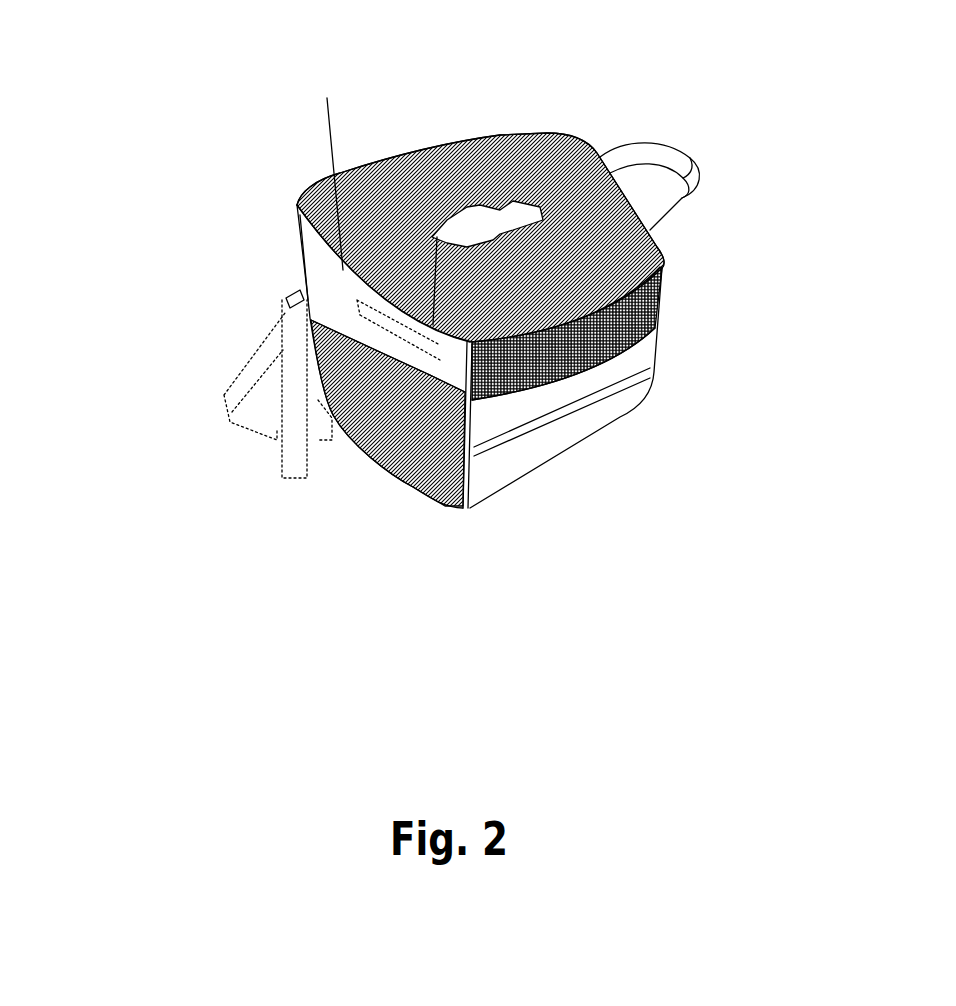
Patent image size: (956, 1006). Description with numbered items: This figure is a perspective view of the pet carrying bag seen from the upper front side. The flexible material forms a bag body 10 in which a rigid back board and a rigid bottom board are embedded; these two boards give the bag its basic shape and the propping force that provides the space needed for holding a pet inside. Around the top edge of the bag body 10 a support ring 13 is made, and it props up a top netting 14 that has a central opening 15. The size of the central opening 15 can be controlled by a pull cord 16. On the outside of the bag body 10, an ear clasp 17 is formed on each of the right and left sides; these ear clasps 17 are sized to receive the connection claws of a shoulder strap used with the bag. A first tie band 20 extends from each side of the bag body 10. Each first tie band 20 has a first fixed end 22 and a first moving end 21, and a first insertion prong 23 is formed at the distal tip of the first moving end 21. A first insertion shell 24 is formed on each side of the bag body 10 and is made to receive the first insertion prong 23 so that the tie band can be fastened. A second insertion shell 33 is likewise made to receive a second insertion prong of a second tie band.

The bag body 10 is at (572, 455).
The support ring 13 is at (645, 335).
The top netting 14 is at (607, 268).
The central opening 15 is at (493, 220).
The pull cord 16 is at (432, 250).
The ear clasp 17 is at (380, 322).
The first tie band 20 is at (293, 390).
The first moving end 21 is at (280, 323).
The first fixed end 22 is at (303, 223).
The first insertion prong 23 is at (292, 307).
The first insertion shell 24 is at (323, 163).
The second insertion shell 33 is at (317, 422).